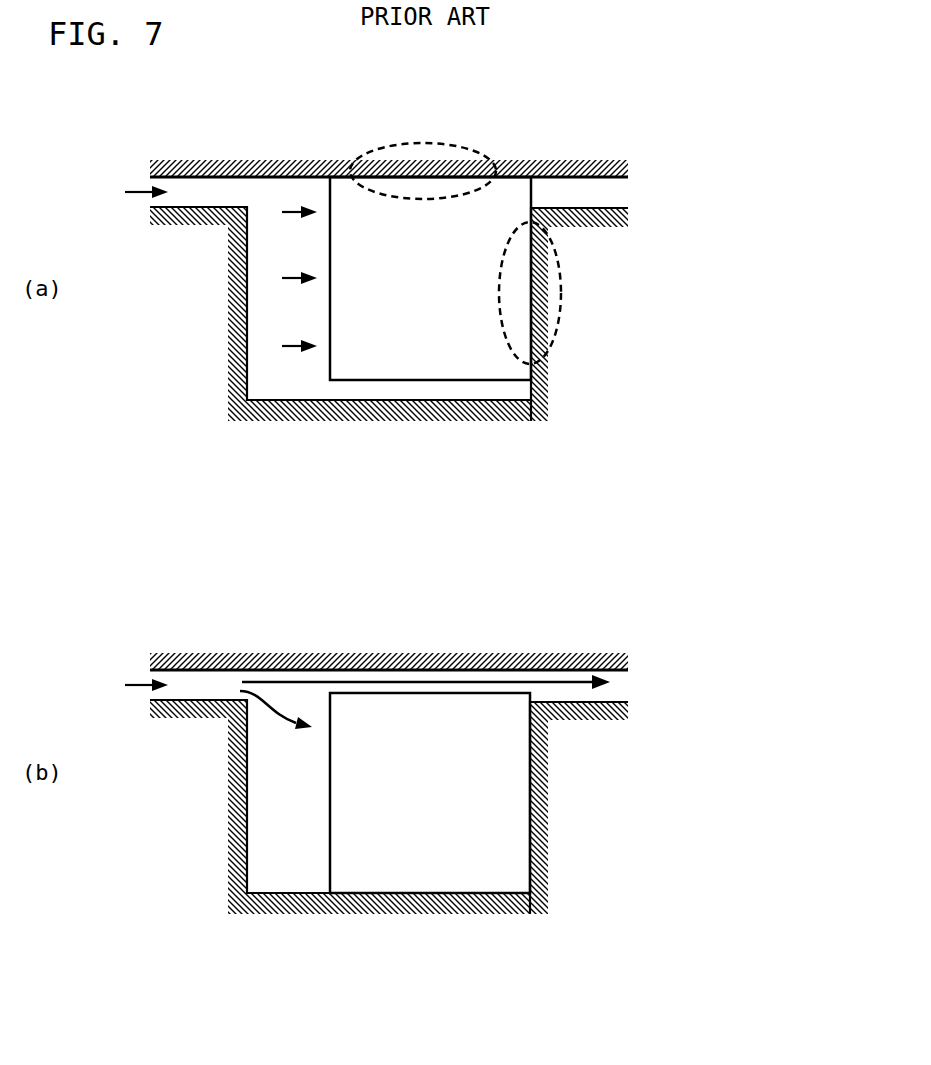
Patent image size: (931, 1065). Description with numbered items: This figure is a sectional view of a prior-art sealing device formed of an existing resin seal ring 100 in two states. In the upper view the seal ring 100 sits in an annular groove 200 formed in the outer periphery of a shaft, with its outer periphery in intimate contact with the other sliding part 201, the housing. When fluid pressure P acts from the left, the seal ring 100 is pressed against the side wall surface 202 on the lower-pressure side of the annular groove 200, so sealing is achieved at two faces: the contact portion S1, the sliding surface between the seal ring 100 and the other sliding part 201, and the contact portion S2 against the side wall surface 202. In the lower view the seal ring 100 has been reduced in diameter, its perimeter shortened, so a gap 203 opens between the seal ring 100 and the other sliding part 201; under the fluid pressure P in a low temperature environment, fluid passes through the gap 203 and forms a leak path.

The seal ring 100 is at (448, 288).
The annular groove 200 is at (262, 304).
The other sliding part 201 is at (300, 112).
The side wall surface 202 is at (531, 392).
The gap 203 is at (480, 678).
The fluid pressure P is at (134, 440).
The contact portion S1 is at (423, 156).
The contact portion S2 is at (547, 293).